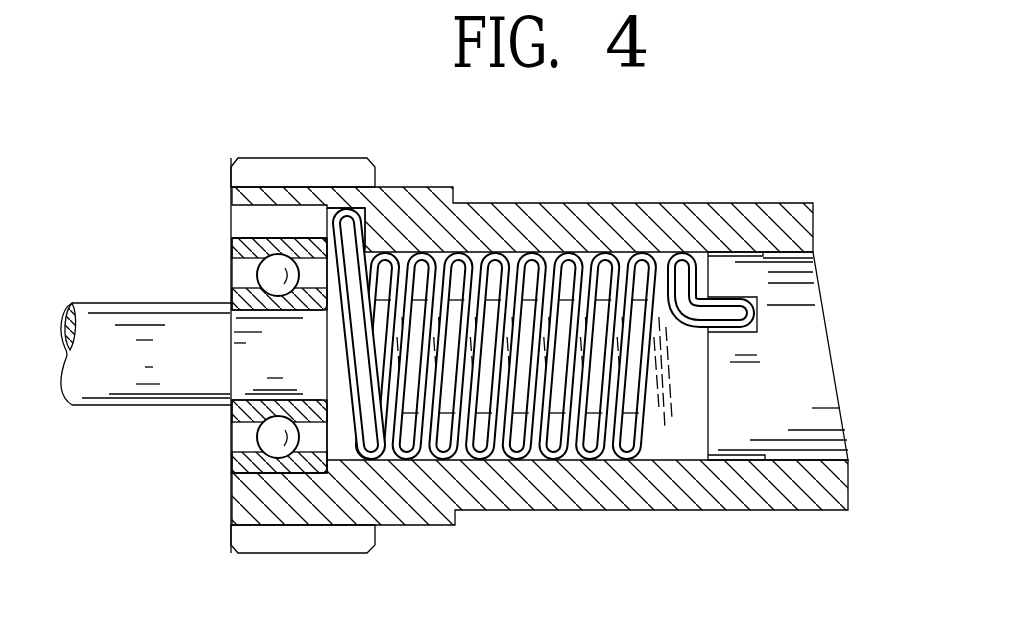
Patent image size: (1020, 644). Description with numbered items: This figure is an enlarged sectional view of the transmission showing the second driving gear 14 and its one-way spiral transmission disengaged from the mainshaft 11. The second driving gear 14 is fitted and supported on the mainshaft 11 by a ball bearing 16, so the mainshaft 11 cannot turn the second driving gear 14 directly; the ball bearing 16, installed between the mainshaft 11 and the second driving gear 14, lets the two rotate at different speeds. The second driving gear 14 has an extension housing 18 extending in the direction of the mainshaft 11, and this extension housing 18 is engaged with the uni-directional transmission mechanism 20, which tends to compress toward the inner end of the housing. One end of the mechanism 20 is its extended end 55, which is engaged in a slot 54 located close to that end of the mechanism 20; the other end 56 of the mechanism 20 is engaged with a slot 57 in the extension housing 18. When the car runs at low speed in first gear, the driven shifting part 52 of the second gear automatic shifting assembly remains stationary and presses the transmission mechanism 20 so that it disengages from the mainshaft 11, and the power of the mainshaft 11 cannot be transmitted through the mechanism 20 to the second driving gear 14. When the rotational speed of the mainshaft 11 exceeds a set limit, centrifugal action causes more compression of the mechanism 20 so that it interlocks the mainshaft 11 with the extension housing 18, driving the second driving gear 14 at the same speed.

The mainshaft 11 is at (135, 325).
The second driving gear 14 is at (298, 157).
The ball bearing 16 is at (243, 467).
The extension housing 18 is at (519, 203).
The uni-directional transmission mechanism 20 is at (521, 440).
The driven shifting part 52 is at (785, 275).
The slot 54 is at (728, 315).
The extended end 55 is at (743, 318).
The other end 56 is at (363, 215).
The slot 57 is at (333, 207).